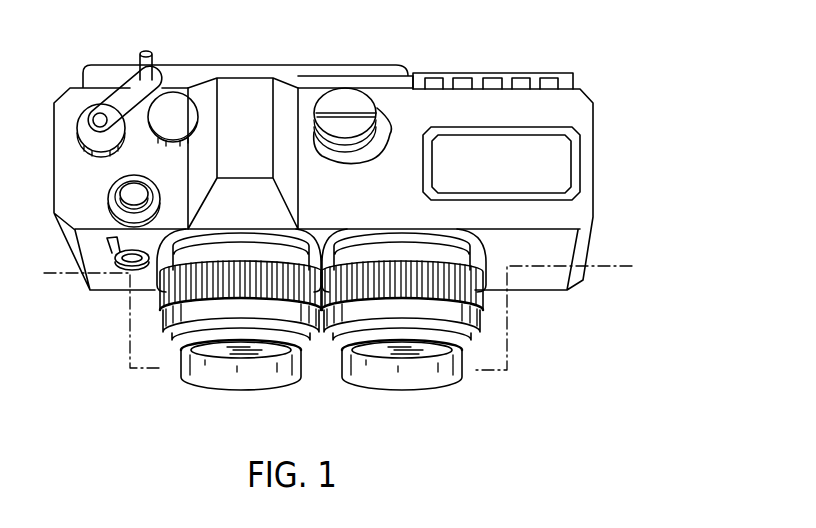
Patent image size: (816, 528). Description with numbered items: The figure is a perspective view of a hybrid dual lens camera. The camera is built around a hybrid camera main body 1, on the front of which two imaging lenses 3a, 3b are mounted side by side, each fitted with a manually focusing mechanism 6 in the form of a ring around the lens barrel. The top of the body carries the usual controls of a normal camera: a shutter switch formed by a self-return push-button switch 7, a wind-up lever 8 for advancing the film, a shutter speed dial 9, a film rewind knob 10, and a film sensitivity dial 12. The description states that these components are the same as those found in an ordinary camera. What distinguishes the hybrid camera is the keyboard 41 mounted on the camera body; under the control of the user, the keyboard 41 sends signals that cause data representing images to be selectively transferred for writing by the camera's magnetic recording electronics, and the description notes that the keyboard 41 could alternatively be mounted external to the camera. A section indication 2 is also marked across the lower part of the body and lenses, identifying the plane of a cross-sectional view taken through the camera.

The hybrid camera main body 1 is at (593, 105).
The section line II-II 2 is at (339, 312).
The imaging lens 3a is at (247, 358).
The imaging lens 3b is at (410, 358).
The manually focusing mechanism 6 is at (418, 270).
The self-return push-button switch 7 is at (118, 184).
The wind-up lever 8 is at (128, 82).
The shutter speed dial 9 is at (345, 103).
The film rewind knob 10 is at (177, 103).
The film sensitivity dial 12 is at (383, 118).
The keyboard 41 is at (507, 73).